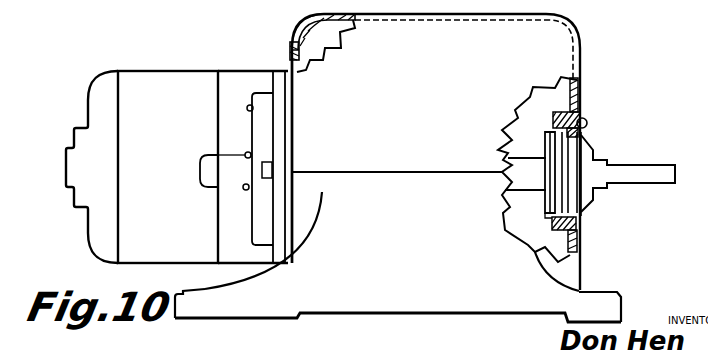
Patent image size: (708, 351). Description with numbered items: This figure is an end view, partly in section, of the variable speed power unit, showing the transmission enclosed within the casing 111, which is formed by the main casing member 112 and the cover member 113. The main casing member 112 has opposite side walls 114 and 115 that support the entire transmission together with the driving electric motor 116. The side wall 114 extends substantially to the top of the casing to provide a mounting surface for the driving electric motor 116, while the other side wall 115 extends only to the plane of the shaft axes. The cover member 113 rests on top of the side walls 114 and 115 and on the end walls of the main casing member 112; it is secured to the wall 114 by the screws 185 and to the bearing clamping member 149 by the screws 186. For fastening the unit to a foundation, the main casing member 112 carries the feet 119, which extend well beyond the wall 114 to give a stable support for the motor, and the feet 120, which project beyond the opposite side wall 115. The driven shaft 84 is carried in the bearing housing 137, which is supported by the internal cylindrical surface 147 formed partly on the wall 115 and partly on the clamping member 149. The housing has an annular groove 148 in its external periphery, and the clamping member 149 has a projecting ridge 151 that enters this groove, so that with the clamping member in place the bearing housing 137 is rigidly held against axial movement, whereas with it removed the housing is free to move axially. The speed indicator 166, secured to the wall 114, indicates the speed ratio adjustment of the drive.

The driven shaft 84 is at (523, 158).
The casing 111 is at (557, 242).
The main casing member 112 is at (423, 302).
The cover member 113 is at (587, 33).
The side wall 114 is at (292, 62).
The side wall 115 is at (580, 247).
The driving electric motor 116 is at (177, 134).
The feet 119 is at (197, 290).
The feet 120 is at (622, 283).
The bearing housing 137 is at (587, 150).
The internal cylindrical surface 147 is at (571, 215).
The annular groove 148 is at (552, 222).
The bearing clamping member 149 is at (580, 105).
The projecting ridge 151 is at (555, 125).
The speed indicator 166 is at (257, 210).
The screws 185 is at (296, 46).
The screws 186 is at (587, 122).